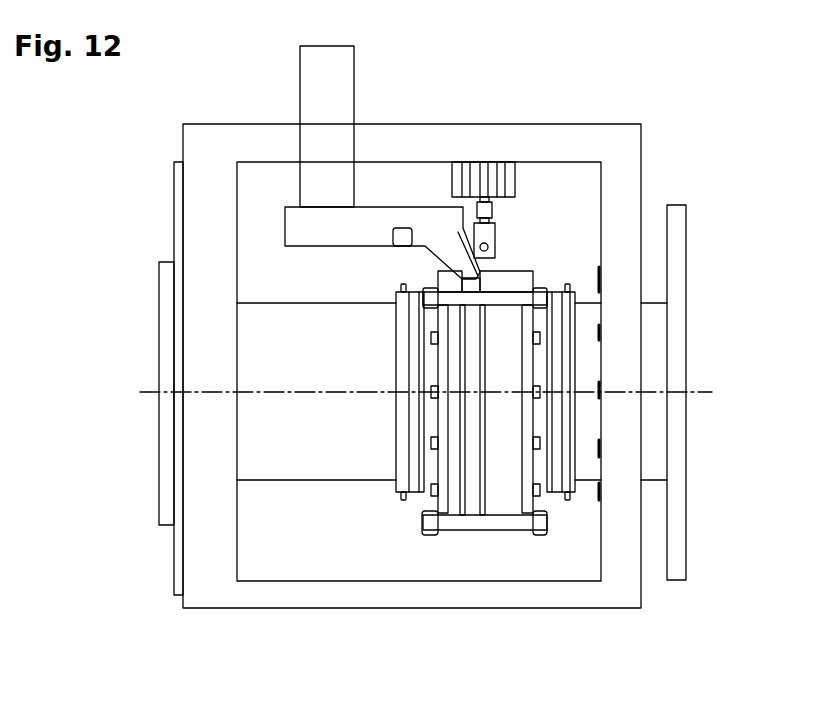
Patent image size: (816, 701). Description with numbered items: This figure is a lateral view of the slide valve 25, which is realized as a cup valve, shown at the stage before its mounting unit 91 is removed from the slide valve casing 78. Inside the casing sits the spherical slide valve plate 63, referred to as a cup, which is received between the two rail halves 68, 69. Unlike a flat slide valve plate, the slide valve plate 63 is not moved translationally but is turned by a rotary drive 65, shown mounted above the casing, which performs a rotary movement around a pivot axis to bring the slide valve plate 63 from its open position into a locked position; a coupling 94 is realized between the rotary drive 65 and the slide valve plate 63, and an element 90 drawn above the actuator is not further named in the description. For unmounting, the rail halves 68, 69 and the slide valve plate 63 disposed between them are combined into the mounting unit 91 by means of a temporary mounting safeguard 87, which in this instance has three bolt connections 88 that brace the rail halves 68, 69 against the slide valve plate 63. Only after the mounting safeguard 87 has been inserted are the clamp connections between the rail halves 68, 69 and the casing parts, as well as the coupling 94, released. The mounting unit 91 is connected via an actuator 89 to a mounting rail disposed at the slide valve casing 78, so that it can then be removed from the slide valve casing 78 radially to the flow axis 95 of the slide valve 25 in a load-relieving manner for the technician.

The slide valve 25 is at (128, 226).
The slide valve plate 63 is at (473, 505).
The rotary drive 65 is at (348, 80).
The rail half 68 is at (430, 475).
The rail half 69 is at (542, 472).
The slide valve casing 78 is at (602, 124).
The temporary mounting safeguard 87 is at (493, 539).
The bolt connection 88 is at (507, 520).
The actuator 89 is at (497, 237).
The adjustment knob 90 is at (498, 162).
The mounting unit 91 is at (430, 362).
The coupling 94 is at (413, 229).
The flow axis 95 is at (700, 392).